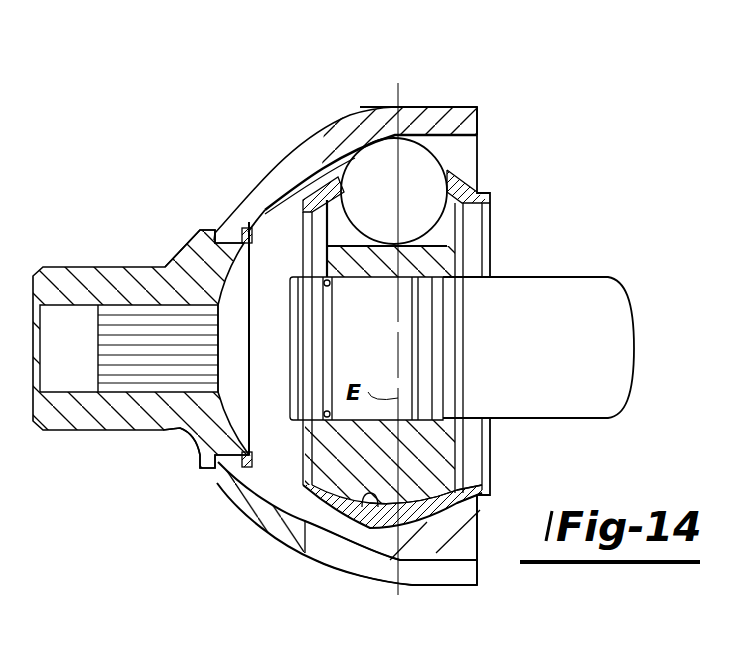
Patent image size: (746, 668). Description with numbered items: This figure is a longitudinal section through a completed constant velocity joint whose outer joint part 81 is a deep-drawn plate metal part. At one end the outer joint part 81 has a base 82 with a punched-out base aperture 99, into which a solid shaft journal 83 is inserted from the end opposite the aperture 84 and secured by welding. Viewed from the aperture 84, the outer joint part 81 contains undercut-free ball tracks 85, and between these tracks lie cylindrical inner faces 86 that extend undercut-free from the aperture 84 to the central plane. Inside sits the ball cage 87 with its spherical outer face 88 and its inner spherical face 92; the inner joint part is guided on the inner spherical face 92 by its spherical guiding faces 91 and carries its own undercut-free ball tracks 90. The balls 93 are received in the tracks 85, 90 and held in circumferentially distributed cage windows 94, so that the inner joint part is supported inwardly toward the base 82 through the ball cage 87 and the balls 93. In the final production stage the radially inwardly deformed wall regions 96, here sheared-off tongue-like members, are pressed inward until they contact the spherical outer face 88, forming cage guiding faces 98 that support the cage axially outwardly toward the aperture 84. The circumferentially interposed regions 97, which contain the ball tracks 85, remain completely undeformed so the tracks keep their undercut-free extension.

The outer joint part 81 is at (277, 170).
The base 82 is at (200, 262).
The shaft journal 83 is at (110, 290).
The aperture 84 is at (480, 160).
The ball tracks of the outer joint part 85 is at (450, 130).
The inner faces 86 is at (334, 522).
The ball cage 87 is at (338, 512).
The spherical outer face of the cage 88 is at (256, 520).
The ball tracks of the inner joint part 90 is at (435, 243).
The spherical guiding faces 91 is at (380, 500).
The inner spherical face of the cage 92 is at (362, 507).
The balls 93 is at (430, 140).
The cage windows 94 is at (363, 143).
The radially inwardly deformed wall regions 96 is at (448, 540).
The circumferentially interposed regions 97 is at (468, 570).
The cage guiding faces 98 is at (477, 503).
The base aperture 99 is at (243, 238).